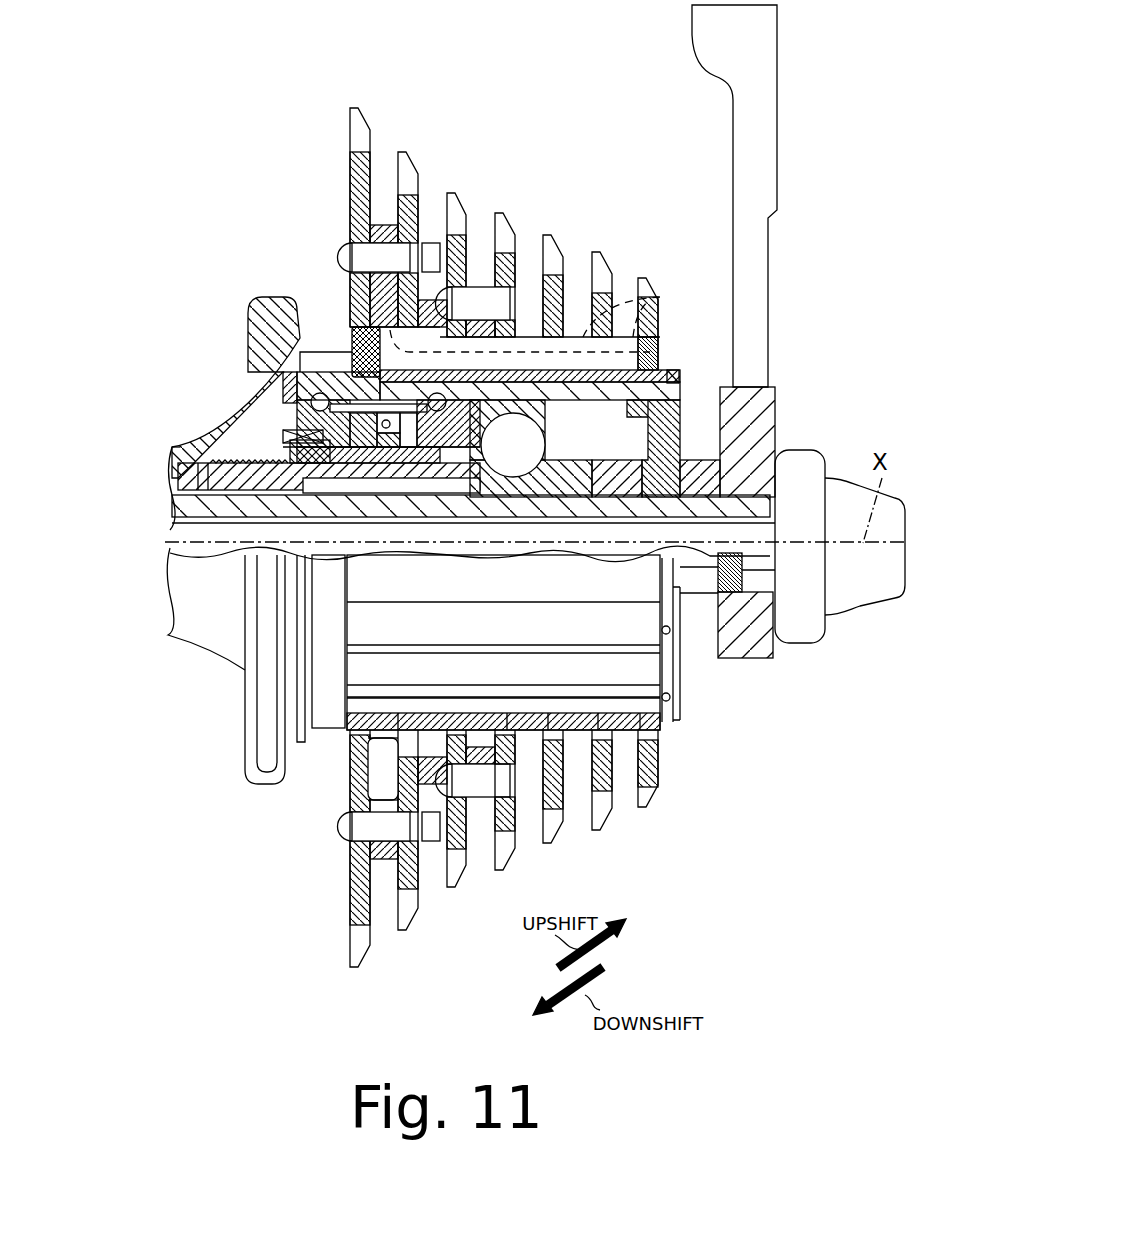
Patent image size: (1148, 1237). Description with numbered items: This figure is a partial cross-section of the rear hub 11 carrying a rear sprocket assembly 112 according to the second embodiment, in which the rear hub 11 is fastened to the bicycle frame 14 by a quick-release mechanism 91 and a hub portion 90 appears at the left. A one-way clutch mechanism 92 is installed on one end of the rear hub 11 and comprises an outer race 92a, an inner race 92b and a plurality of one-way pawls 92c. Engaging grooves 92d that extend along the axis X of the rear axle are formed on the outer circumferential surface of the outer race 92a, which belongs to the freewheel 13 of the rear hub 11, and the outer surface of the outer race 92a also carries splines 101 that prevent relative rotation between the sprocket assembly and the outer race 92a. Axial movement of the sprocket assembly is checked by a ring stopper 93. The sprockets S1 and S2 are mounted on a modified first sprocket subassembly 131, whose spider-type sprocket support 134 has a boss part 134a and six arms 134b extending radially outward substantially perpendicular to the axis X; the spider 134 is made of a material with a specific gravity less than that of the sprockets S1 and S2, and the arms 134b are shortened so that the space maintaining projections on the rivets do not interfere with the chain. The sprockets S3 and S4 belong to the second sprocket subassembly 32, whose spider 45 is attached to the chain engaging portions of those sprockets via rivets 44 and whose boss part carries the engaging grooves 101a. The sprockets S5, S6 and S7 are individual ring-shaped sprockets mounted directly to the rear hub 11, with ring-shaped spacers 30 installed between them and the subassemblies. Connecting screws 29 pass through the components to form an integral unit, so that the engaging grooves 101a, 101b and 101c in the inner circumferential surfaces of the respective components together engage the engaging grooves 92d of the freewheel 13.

The rear hub 11 is at (187, 437).
The freewheel 13 is at (695, 652).
The bicycle frame 14 is at (770, 155).
The connecting screws 29 is at (440, 313).
The ring-shaped spacers 30 is at (655, 300).
The second sprocket subassembly 32 is at (427, 817).
The rivets 44 is at (565, 785).
The spider 45 is at (490, 797).
The hub shell 90 is at (237, 313).
The quick-release mechanism 91 is at (855, 593).
The one-way clutch mechanism 92 is at (489, 488).
The outer race 92a is at (327, 352).
The inner race 92b is at (283, 420).
The one-way pawls 92c is at (405, 438).
The engaging grooves 92d is at (652, 667).
The ring stopper 93 is at (685, 378).
The splines 101 is at (427, 695).
The engaging grooves 101a is at (398, 712).
The engaging grooves 101b is at (640, 710).
The engaging grooves 101c is at (600, 736).
The sprocket assembly 112 is at (480, 206).
The first sprocket subassembly 131 is at (383, 965).
The spider-type sprocket support 134 is at (266, 800).
The boss part 134a is at (350, 733).
The sprocket support arms 134b is at (347, 775).
The sprocket S1 is at (356, 108).
The sprocket S2 is at (403, 152).
The sprocket S3 is at (455, 193).
The sprocket S4 is at (505, 213).
The sprocket S5 is at (548, 235).
The sprocket S6 is at (600, 252).
The sprocket S7 is at (645, 278).